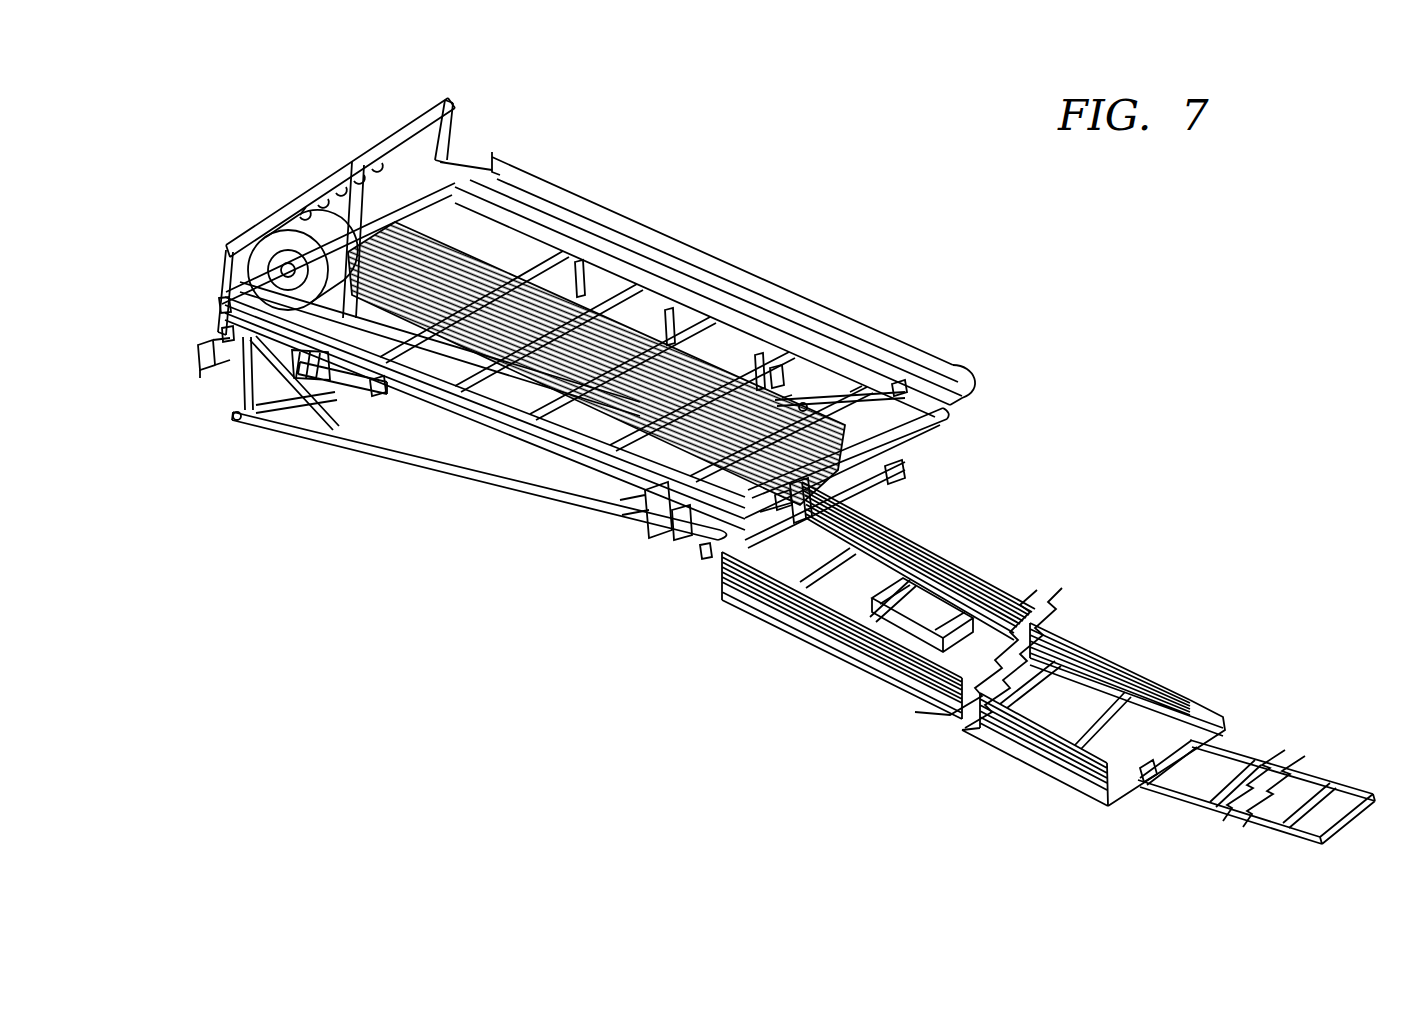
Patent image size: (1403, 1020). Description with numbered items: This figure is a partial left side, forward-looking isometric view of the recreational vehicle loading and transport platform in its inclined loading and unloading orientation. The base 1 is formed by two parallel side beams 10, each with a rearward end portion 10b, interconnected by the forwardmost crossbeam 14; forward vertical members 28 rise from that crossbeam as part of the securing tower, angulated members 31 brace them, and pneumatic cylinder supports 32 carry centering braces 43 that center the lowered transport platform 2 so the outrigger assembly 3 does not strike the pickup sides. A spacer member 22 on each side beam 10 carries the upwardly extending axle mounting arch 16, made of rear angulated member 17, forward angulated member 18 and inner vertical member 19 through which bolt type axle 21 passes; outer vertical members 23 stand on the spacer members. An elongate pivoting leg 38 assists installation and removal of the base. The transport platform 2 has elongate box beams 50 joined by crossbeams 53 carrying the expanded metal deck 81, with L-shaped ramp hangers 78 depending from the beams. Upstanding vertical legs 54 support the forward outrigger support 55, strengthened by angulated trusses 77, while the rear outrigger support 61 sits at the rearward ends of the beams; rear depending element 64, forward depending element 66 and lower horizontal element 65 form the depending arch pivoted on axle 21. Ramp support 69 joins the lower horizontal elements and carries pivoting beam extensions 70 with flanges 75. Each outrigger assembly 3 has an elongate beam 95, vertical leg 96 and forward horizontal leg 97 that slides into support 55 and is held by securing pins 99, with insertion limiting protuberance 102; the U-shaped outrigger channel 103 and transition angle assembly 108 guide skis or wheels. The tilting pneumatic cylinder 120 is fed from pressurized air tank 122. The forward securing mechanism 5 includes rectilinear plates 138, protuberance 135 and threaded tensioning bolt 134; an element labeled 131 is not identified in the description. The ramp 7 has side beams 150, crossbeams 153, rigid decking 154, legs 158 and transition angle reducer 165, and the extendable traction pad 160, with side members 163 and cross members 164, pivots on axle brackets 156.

The base 1 is at (532, 500).
The transport platform 2 is at (335, 152).
The outrigger assembly 3 is at (700, 228).
The forward securing mechanism 5 is at (210, 372).
The ramp 7 is at (1010, 560).
The side beam 10 is at (450, 470).
The rearward end portion 10b is at (905, 475).
The forwardmost crossbeam 14 is at (250, 412).
The axle mounting arch 16 is at (657, 492).
The rear angulated member 17 is at (910, 470).
The forward angulated member 18 is at (580, 520).
The inner vertical member 19 is at (786, 398).
The bolt type axle 21 is at (806, 402).
The spacer member 22 is at (630, 510).
The outer vertical member 23 is at (660, 535).
The forward vertical member 28 is at (235, 417).
The angulated member 31 is at (338, 402).
The pneumatic cylinder support 32 is at (335, 432).
The elongate pivoting leg 38 is at (390, 392).
The centering brace 43 is at (382, 398).
The elongate box beam 50 is at (692, 232).
The crossbeam 53 is at (490, 385).
The upstanding vertical leg 54 is at (405, 130).
The forward outrigger support 55 is at (312, 230).
The rear outrigger support 61 is at (898, 378).
The rear depending element 64 is at (858, 388).
The lower horizontal element 65 is at (828, 398).
The forward depending element 66 is at (777, 368).
The ramp support 69 is at (800, 500).
The pivoting beam extension 70 is at (935, 425).
The upwardly extending flange 75 is at (703, 558).
The angulated truss 77 is at (340, 146).
The ramp hanger 78 is at (585, 268).
The deck 81 is at (415, 250).
The elongate beam 95 is at (495, 160).
The vertical leg 96 is at (452, 140).
The forward horizontal leg 97 is at (456, 101).
The securing pin 99 is at (270, 205).
The insertion limiting protuberance 102 is at (262, 224).
The outrigger channel 103 is at (568, 198).
The transition angle assembly 108 is at (978, 390).
The pneumatic cylinder 120 is at (355, 200).
The pressurized air tank 122 is at (345, 260).
The bracket 131 is at (223, 333).
The threaded tensioning bolt 134 is at (219, 302).
The protuberance 135 is at (198, 352).
The rectilinear plate 138 is at (205, 375).
The side beam 150 is at (1222, 716).
The crossbeam 153 is at (825, 565).
The rigid decking 154 is at (1055, 640).
The axle bracket 156 is at (1160, 758).
The leg 158 is at (765, 535).
The extendable traction pad 160 is at (1236, 828).
The elongate side member 163 is at (1300, 775).
The cross member 164 is at (1215, 785).
The transition angle reducer 165 is at (880, 625).